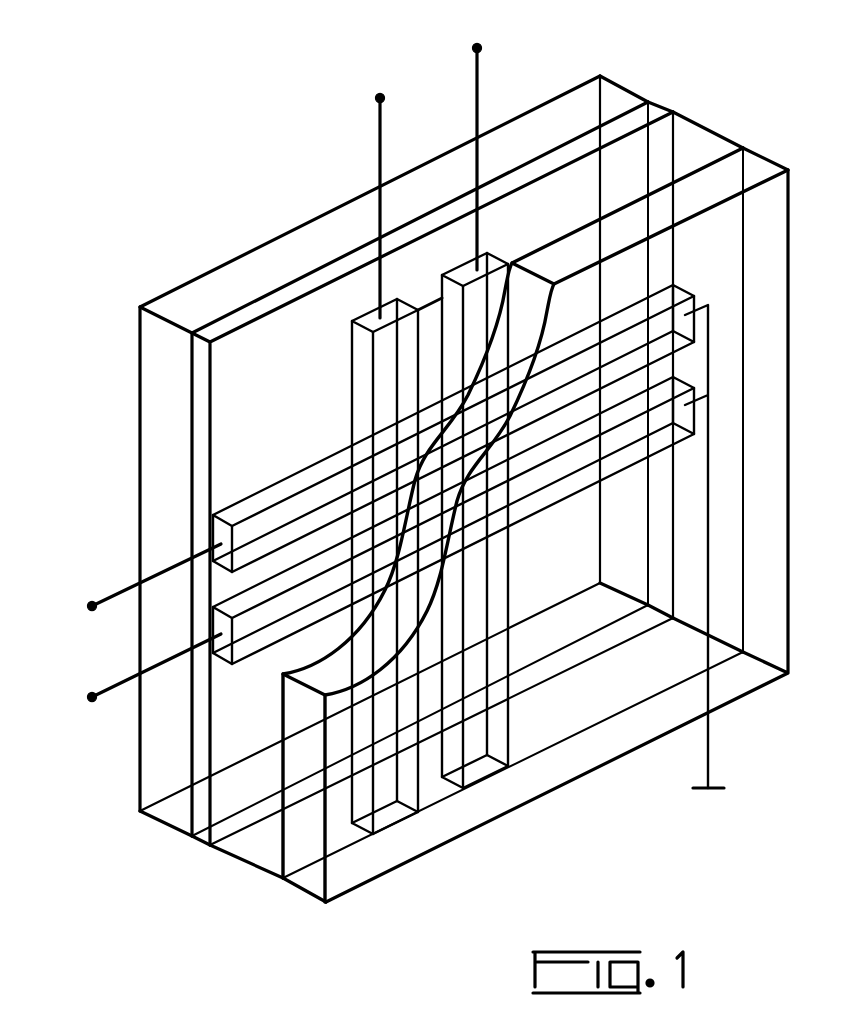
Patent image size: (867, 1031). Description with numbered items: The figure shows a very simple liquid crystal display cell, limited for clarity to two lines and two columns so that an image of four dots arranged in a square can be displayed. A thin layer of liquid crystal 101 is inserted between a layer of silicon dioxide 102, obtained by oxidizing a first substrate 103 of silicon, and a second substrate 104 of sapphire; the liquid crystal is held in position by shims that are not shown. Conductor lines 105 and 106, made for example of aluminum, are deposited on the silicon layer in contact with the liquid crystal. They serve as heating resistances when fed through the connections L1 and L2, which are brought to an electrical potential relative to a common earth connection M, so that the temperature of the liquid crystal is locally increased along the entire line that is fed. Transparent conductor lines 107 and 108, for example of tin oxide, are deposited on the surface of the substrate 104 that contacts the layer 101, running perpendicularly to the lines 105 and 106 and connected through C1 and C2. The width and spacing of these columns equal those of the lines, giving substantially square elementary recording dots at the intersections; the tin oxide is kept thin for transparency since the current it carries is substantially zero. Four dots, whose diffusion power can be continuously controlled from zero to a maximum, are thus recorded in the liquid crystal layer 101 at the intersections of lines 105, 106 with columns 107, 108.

The thin layer of liquid crystal 101 is at (253, 851).
The layer of silicon dioxide 102 is at (205, 830).
The first substrate 103 is at (176, 811).
The second substrate 104 is at (311, 880).
The conductor line 105 is at (243, 506).
The conductor line 106 is at (260, 637).
The transparent conductor line 107 is at (353, 354).
The transparent conductor line 108 is at (437, 307).
The column connection C1 is at (367, 193).
The column connection C2 is at (461, 146).
The connection L1 is at (141, 577).
The connection L2 is at (141, 668).
The common earth connection M is at (704, 561).